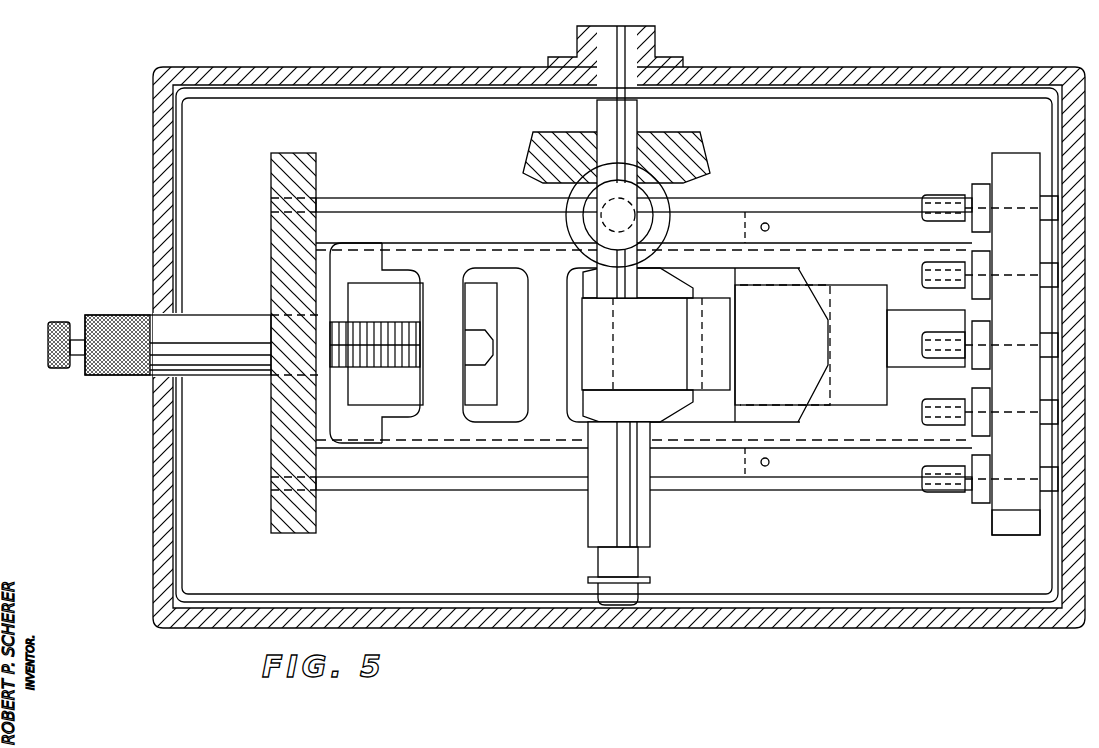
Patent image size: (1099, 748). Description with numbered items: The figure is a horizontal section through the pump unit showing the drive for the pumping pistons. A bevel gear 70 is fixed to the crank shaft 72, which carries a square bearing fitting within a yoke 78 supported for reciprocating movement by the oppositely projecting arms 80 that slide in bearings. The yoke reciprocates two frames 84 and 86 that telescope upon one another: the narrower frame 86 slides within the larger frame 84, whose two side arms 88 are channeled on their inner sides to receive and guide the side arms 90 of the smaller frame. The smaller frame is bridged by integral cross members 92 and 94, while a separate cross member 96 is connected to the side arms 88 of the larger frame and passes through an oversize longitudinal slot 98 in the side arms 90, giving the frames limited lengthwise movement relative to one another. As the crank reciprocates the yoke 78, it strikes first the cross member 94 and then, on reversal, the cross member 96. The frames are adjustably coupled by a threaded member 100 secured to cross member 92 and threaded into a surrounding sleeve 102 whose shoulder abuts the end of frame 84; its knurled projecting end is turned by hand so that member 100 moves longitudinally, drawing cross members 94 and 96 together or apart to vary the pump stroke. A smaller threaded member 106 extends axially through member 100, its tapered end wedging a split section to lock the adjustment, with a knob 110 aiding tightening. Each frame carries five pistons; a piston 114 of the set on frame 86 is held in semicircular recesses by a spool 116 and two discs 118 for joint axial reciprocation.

The bevel gear 70 is at (690, 152).
The crank shaft 72 is at (675, 330).
The yoke 78 is at (702, 385).
The oppositely projecting arms 80 is at (920, 330).
The frame 84 is at (275, 475).
The frame 86 is at (998, 522).
The side arms 88 is at (447, 205).
The side arms 90 is at (510, 257).
The cross member 92 is at (433, 392).
The cross member 94 is at (537, 394).
The cross member 96 is at (808, 305).
The slot 98 is at (727, 462).
The threaded member 100 is at (340, 330).
The sleeve 102 is at (235, 328).
The smaller threaded member 106 is at (78, 337).
The knob 110 is at (48, 347).
The piston 114 is at (945, 195).
The spool 116 is at (1016, 205).
The discs 118 is at (980, 184).